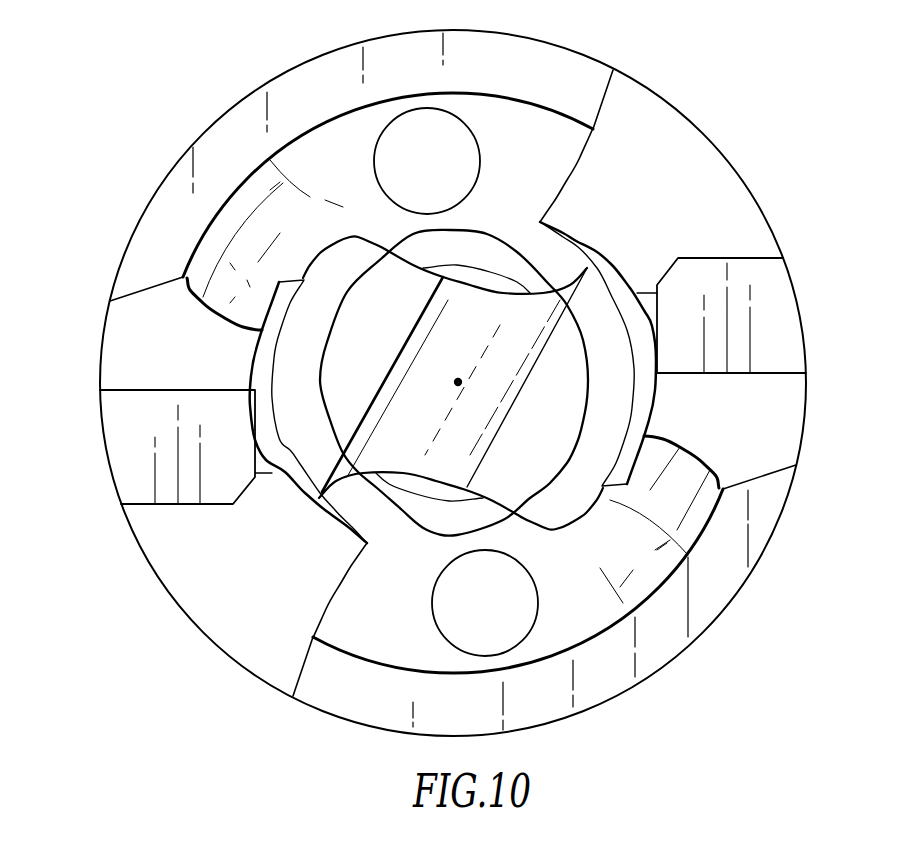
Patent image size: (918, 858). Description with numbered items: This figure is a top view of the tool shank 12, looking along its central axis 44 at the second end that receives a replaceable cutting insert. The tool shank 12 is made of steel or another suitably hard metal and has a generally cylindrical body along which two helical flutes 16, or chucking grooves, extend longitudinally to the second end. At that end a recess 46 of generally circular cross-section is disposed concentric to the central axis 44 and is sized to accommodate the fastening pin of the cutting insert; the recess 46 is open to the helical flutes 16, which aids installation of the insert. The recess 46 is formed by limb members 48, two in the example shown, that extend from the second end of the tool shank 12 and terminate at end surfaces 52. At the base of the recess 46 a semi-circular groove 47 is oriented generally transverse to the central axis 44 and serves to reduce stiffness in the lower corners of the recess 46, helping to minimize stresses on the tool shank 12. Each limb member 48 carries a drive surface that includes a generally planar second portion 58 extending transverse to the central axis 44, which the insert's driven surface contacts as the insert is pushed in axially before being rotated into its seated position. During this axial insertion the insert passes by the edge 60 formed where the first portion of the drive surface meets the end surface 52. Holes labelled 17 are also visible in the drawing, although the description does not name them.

The tool shank 12 is at (213, 107).
The helical flutes 16 is at (330, 158).
The hole 17 is at (448, 138).
The central axis 44 is at (458, 382).
The recess 46 is at (332, 298).
The semi-circular groove 47 is at (482, 303).
The limb members 48 is at (459, 374).
The end surfaces 52 is at (768, 322).
The second portion 58 is at (643, 107).
The edge 60 is at (730, 258).